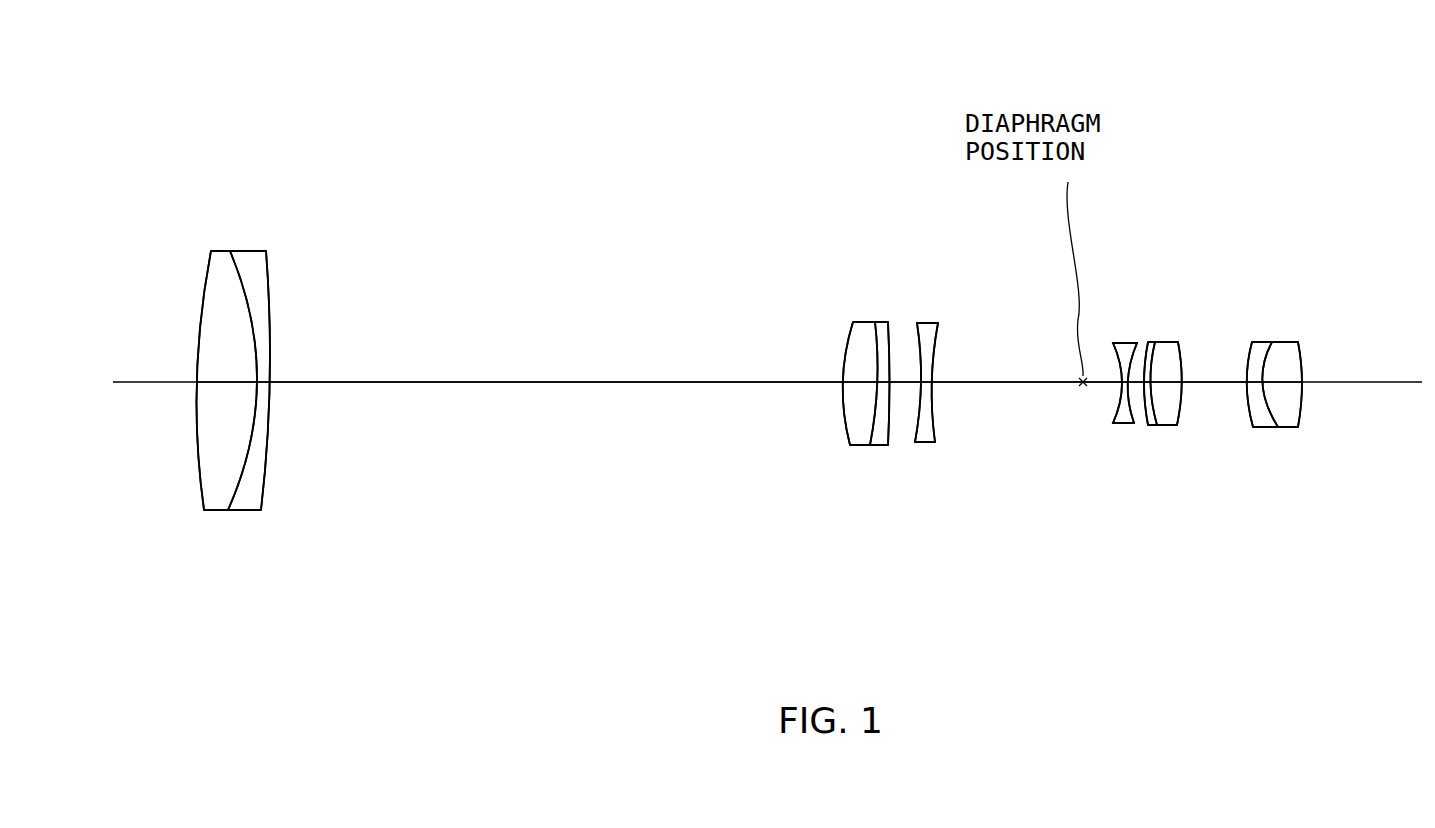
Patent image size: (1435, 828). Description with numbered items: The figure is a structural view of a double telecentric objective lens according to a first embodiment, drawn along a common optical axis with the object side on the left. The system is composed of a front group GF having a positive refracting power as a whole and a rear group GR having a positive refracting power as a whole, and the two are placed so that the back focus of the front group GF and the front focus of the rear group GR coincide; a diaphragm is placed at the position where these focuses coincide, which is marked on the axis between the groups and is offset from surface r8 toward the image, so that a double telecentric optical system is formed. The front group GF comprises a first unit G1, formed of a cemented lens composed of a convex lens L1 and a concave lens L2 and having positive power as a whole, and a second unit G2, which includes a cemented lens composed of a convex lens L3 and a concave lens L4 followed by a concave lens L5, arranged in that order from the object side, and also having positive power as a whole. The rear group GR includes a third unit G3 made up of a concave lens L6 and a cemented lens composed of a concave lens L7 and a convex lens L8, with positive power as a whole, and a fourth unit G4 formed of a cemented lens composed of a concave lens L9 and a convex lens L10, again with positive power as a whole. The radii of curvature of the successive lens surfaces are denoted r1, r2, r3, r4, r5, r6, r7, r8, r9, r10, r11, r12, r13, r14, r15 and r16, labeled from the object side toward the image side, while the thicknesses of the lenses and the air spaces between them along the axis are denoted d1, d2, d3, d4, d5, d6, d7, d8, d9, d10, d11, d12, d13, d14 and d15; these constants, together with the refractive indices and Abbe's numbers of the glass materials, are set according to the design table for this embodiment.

The front group GF is at (957, 65).
The rear group GR is at (1358, 65).
The first unit G1 is at (281, 176).
The second unit G2 is at (940, 183).
The third unit G3 is at (1213, 181).
The fourth unit G4 is at (1347, 183).
The convex lens L1 is at (217, 254).
The concave lens L2 is at (247, 254).
The convex lens L3 is at (866, 328).
The concave lens L4 is at (886, 328).
The concave lens L5 is at (930, 328).
The concave lens L6 is at (1127, 348).
The concave lens L7 is at (1157, 348).
The convex lens L8 is at (1170, 348).
The concave lens L9 is at (1261, 348).
The convex lens L10 is at (1289, 348).
The radius of curvature of lens surface r1 is at (203, 493).
The radius of curvature of lens surface r2 is at (236, 500).
The radius of curvature of lens surface r3 is at (265, 495).
The radius of curvature of lens surface r4 is at (842, 430).
The radius of curvature of lens surface r5 is at (871, 432).
The radius of curvature of lens surface r6 is at (892, 433).
The radius of curvature of lens surface r7 is at (915, 432).
The radius of curvature of lens surface r8 is at (937, 433).
The radius of curvature of lens surface r9 is at (1116, 418).
The radius of curvature of lens surface r10 is at (1125, 424).
The radius of curvature of lens surface r11 is at (1143, 428).
The radius of curvature of lens surface r12 is at (1158, 428).
The radius of curvature of lens surface r13 is at (1180, 428).
The radius of curvature of lens surface r14 is at (1255, 428).
The radius of curvature of lens surface r15 is at (1282, 428).
The radius of curvature of lens surface r16 is at (1300, 428).
The lens thickness or space d1 is at (227, 368).
The lens thickness or space d2 is at (266, 378).
The lens thickness or space d3 is at (556, 368).
The lens thickness or space d4 is at (856, 382).
The lens thickness or space d5 is at (884, 382).
The lens thickness or space d6 is at (906, 369).
The lens thickness or space d7 is at (930, 378).
The lens thickness or space d8 is at (1027, 369).
The lens thickness or space d9 is at (1124, 384).
The lens thickness or space d10 is at (1138, 379).
The lens thickness or space d11 is at (1150, 379).
The lens thickness or space d12 is at (1157, 386).
The lens thickness or space d13 is at (1258, 379).
The lens thickness or space d14 is at (1270, 379).
The lens thickness or space d15 is at (1300, 380).